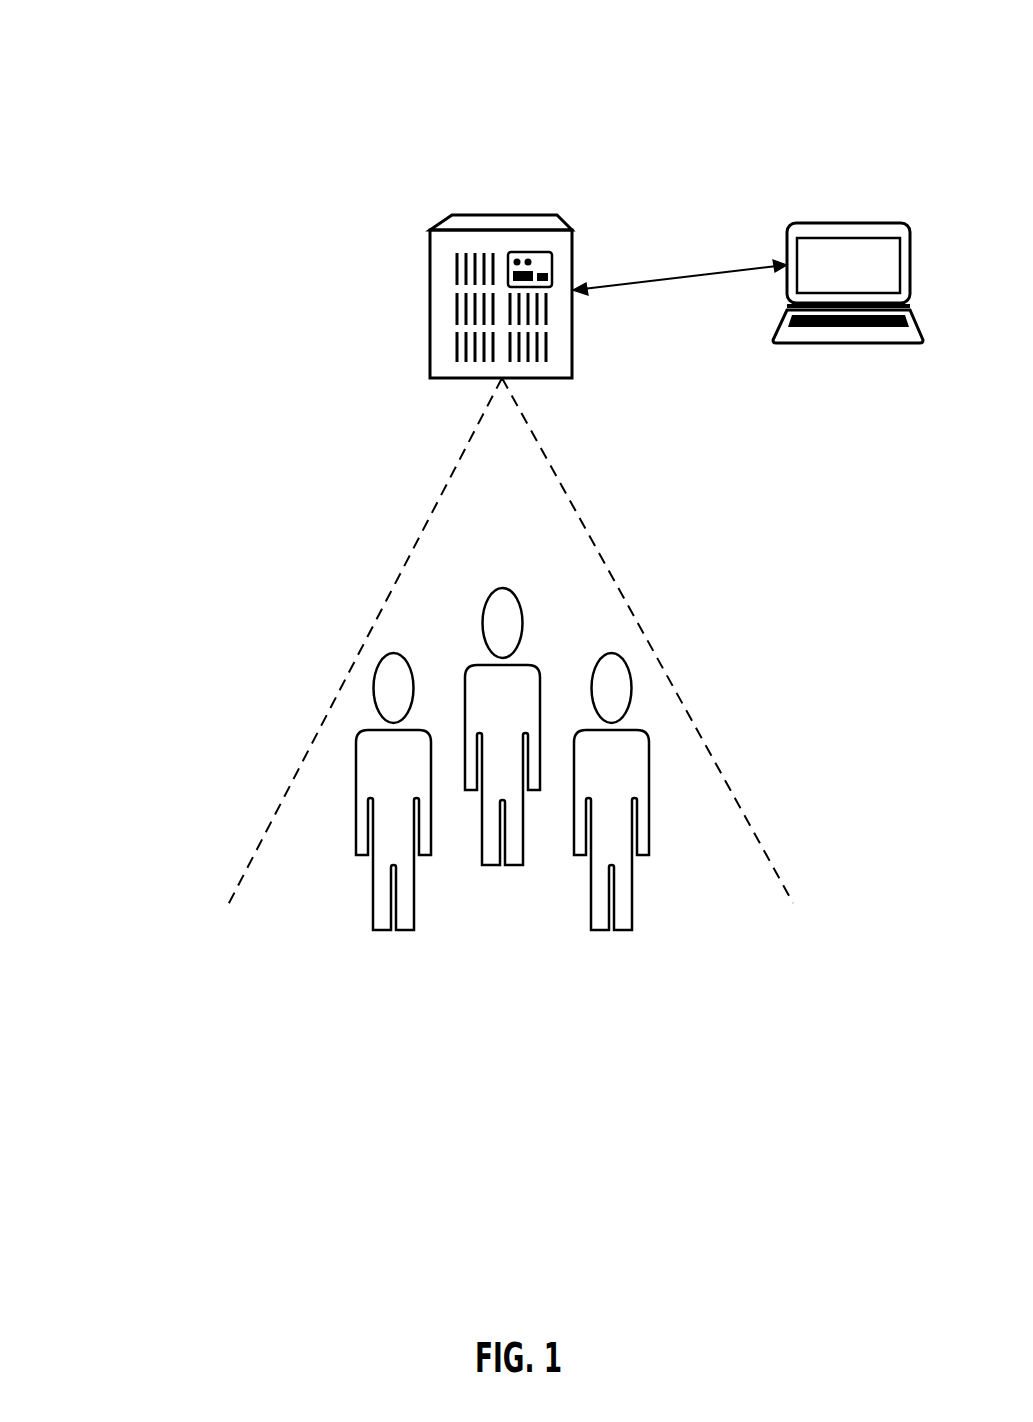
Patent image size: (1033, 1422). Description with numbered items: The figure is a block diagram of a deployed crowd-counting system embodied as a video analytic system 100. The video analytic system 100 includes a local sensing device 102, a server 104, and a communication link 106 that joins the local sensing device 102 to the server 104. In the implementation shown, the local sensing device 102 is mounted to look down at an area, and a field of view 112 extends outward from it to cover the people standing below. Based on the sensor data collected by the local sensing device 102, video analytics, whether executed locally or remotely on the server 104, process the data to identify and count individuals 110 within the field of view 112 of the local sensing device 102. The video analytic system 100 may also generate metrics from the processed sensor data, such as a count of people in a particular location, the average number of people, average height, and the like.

The video analytic system 100 is at (100, 81).
The local sensing device 102 is at (509, 209).
The server 104 is at (858, 222).
The communication link 106 is at (680, 266).
The individuals 110 is at (374, 692).
The field of view 112 is at (418, 543).